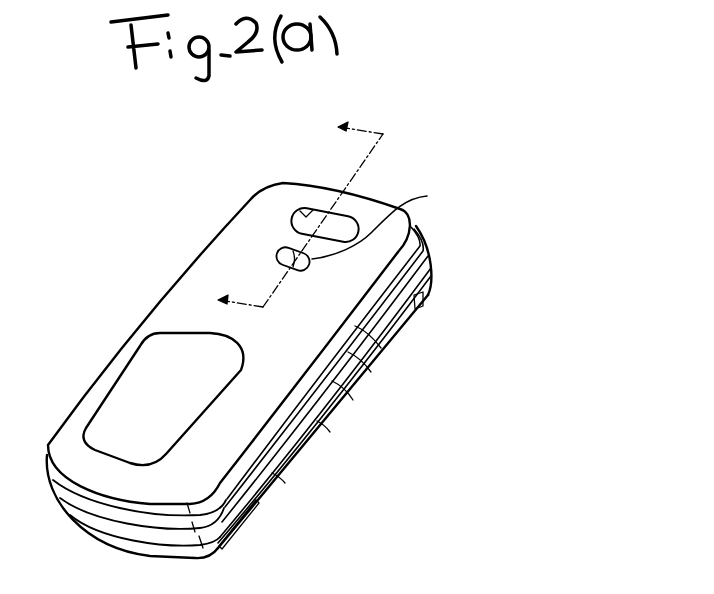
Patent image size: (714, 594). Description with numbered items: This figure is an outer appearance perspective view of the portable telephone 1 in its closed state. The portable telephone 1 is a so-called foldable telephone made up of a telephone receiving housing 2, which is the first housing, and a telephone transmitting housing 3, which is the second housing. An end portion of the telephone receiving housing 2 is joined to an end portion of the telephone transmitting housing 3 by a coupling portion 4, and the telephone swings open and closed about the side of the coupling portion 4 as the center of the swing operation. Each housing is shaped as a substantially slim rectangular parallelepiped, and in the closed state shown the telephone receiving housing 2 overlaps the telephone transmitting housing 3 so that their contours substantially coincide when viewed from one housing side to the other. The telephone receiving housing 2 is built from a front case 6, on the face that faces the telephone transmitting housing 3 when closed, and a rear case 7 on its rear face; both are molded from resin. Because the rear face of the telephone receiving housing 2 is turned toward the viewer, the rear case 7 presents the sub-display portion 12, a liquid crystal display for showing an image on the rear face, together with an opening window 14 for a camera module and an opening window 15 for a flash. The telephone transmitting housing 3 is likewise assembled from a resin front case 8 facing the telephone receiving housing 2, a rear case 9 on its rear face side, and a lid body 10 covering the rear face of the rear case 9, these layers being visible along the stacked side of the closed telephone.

The portable telephone 1 is at (59, 195).
The telephone receiving housing 2 is at (225, 281).
The telephone transmitting housing 3 is at (278, 474).
The coupling portion 4 is at (358, 181).
The front case 6 is at (366, 372).
The rear case 7 is at (381, 345).
The front case 8 is at (345, 392).
The rear case 9 is at (318, 424).
The lid body 10 is at (305, 462).
The sub-display portion 12 is at (147, 390).
The opening window for camera module 14 is at (303, 207).
The opening window for flash 15 is at (427, 196).